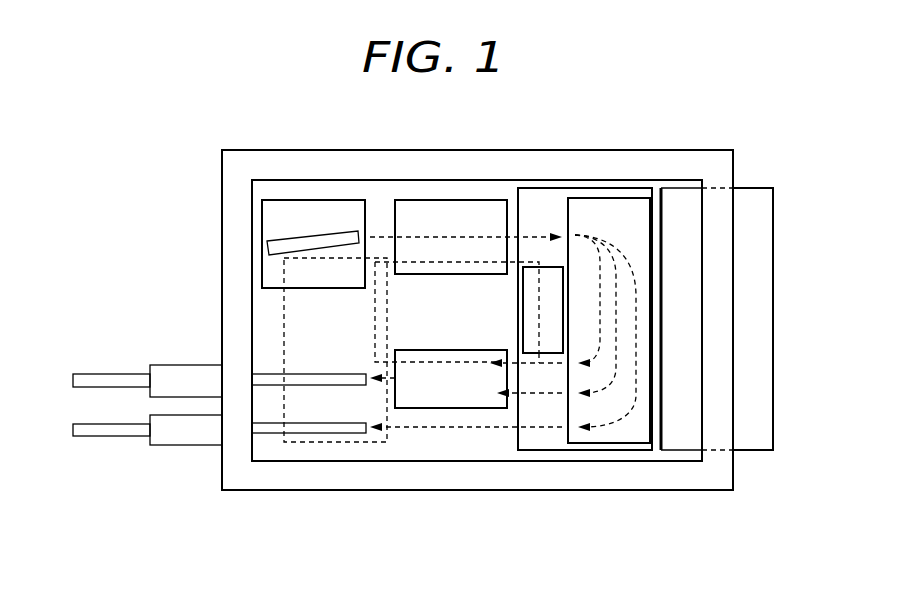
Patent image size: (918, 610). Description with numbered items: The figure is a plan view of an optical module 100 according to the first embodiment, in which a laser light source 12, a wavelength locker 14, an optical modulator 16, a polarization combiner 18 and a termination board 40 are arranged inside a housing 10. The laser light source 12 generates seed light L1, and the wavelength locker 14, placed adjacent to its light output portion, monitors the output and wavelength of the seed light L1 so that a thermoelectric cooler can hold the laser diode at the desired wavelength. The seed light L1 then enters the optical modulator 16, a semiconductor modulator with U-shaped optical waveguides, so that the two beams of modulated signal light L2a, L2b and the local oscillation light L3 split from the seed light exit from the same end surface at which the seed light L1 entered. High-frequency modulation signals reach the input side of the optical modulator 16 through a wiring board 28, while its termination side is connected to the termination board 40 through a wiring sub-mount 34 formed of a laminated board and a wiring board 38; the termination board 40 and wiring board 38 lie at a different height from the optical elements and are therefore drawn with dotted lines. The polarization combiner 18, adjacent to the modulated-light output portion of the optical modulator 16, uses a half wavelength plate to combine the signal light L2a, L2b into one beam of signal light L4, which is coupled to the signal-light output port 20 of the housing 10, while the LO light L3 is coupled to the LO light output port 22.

The optical module 100 is at (659, 505).
The housing 10 is at (371, 150).
The laser light source 12 is at (310, 200).
The wavelength locker 14 is at (420, 200).
The optical modulator 16 is at (626, 198).
The polarization combiner 18 is at (445, 408).
The signal-light output port 20 is at (178, 362).
The LO light output port 22 is at (172, 447).
The wiring board 28 is at (750, 452).
The wiring sub-mount 34 is at (547, 267).
The wiring board 38 is at (506, 258).
The termination board 40 is at (300, 442).
The seed light L1 is at (467, 232).
The signal light L2a is at (528, 363).
The signal light L2b is at (555, 393).
The local oscillation light L3 is at (480, 427).
The signal light L4 is at (405, 380).